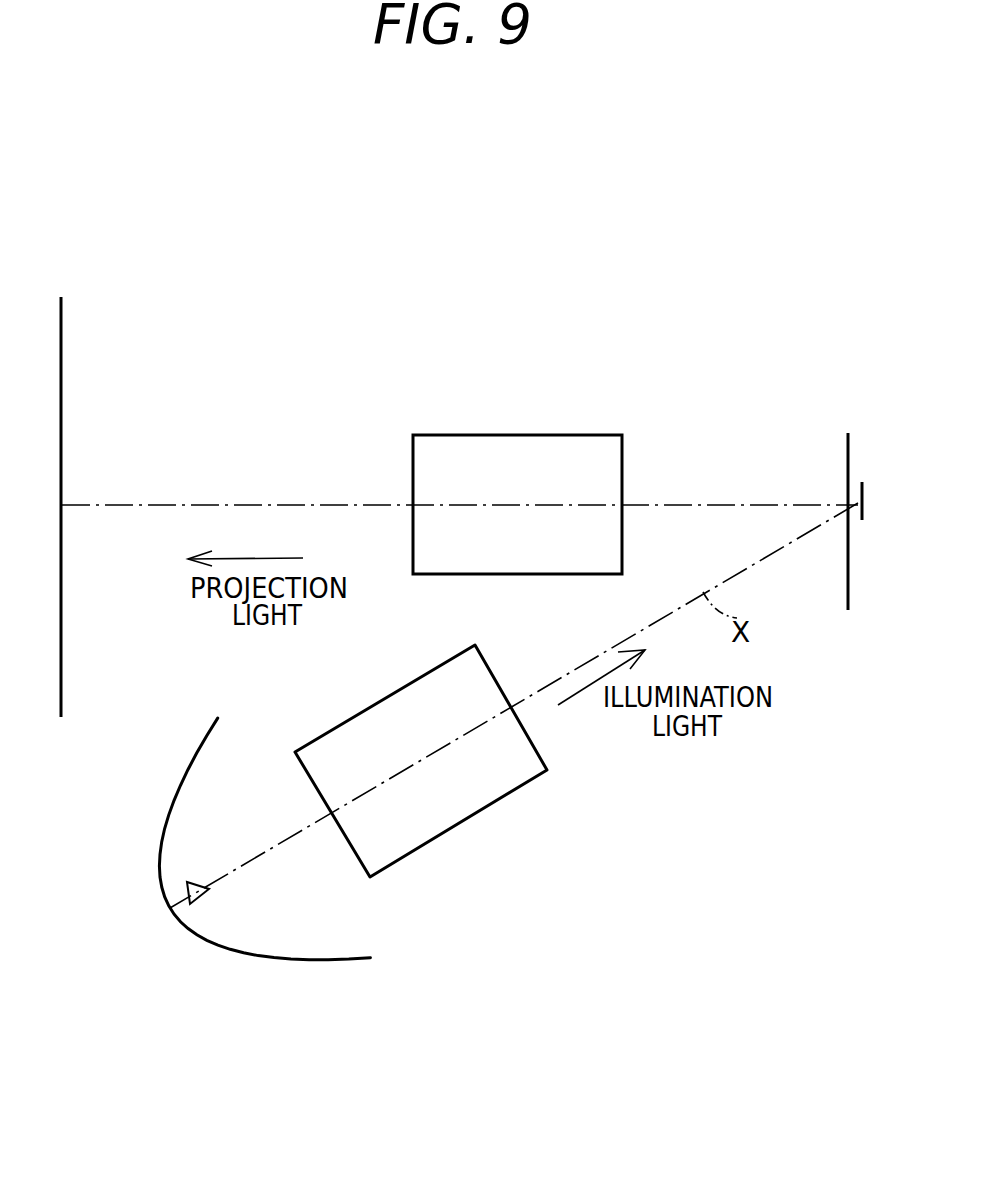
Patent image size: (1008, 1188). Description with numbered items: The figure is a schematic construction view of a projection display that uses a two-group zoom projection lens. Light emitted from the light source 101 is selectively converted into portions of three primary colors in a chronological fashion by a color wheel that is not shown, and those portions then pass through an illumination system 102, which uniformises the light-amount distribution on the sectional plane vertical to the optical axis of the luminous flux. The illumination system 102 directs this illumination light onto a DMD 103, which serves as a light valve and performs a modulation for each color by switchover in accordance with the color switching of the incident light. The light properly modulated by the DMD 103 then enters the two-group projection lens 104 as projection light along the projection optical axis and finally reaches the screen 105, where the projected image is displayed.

The light source 101 is at (193, 977).
The illumination system 102 is at (482, 793).
The DMD (light valve) 103 is at (866, 508).
The two-group projection lens 104 is at (450, 450).
The screen 105 is at (61, 362).